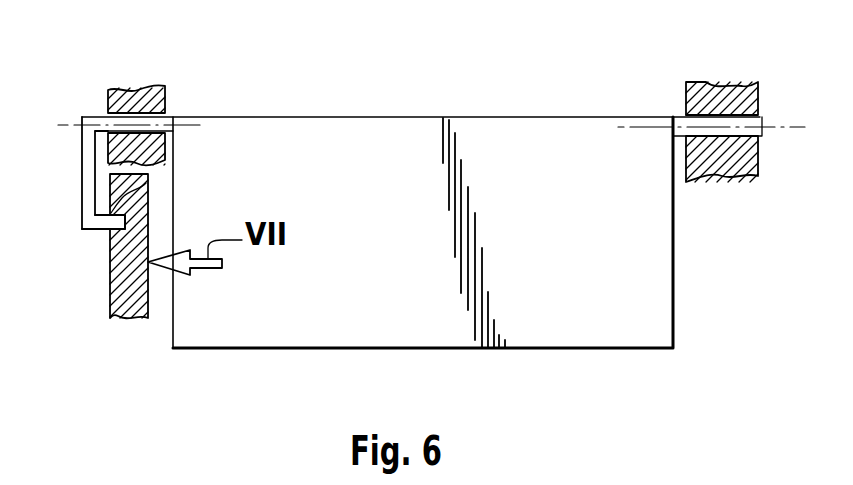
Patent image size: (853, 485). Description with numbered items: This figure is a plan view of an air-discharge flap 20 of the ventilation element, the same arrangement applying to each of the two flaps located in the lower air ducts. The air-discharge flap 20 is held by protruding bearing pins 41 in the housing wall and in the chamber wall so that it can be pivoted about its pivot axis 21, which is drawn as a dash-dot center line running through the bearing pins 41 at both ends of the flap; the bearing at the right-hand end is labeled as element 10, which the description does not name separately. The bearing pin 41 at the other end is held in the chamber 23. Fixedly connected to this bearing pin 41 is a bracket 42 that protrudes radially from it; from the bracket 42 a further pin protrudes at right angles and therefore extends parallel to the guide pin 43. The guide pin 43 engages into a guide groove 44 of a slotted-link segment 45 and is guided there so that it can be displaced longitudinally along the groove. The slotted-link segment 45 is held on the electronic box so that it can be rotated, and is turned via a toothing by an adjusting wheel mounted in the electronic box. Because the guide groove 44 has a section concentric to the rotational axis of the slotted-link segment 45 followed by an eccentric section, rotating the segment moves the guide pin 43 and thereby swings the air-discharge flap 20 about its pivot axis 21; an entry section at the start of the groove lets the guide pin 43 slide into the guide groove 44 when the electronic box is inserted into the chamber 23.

The bearing 10 is at (716, 96).
The air-discharge flap 20 is at (658, 280).
The pivot axis 21 is at (795, 131).
The chamber 23 is at (133, 98).
The bearing pin 41 is at (108, 118).
The bracket 42 is at (82, 172).
The guide pin 43 is at (110, 222).
The guide groove 44 is at (133, 196).
The slotted-link segment 45 is at (122, 300).